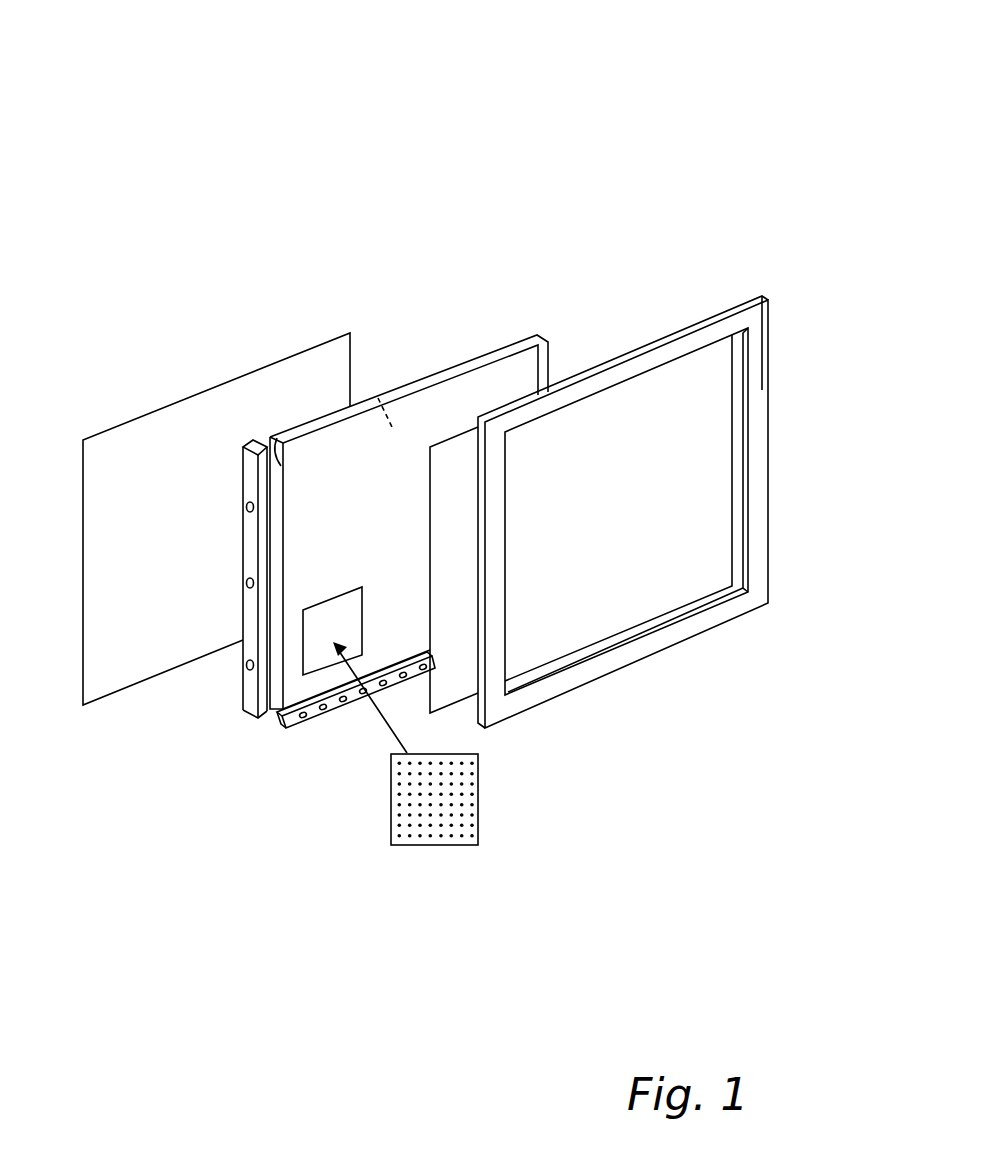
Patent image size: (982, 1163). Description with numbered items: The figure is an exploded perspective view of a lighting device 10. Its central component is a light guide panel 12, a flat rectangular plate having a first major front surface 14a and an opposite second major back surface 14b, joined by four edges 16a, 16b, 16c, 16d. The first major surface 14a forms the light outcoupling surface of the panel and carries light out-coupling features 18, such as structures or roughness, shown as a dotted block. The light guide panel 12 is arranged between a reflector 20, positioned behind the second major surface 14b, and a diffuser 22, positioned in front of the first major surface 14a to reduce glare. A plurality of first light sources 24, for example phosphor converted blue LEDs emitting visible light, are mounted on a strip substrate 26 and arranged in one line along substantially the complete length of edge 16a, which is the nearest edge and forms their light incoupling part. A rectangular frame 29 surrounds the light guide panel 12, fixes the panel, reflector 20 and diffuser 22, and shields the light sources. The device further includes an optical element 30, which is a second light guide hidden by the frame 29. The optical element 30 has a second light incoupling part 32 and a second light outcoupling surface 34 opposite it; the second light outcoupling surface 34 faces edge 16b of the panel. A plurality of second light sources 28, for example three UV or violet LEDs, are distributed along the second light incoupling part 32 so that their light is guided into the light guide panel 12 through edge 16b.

The lighting device 10 is at (446, 190).
The light guide panel 12 is at (494, 378).
The first major surface 14a is at (405, 492).
The second major surface 14b is at (377, 390).
The edge 16a is at (280, 722).
The edge 16b is at (278, 547).
The edge 16c is at (415, 388).
The edge 16d is at (550, 362).
The light out-coupling features 18 is at (473, 797).
The reflector 20 is at (147, 418).
The diffuser 22 is at (612, 618).
The first light sources 24 is at (346, 702).
The strip substrate 26 is at (360, 712).
The second light sources 28 is at (249, 507).
The frame 29 is at (759, 533).
The optical element 30 is at (252, 432).
The second light incoupling part 32 is at (248, 622).
The second light outcoupling surface 34 is at (277, 437).